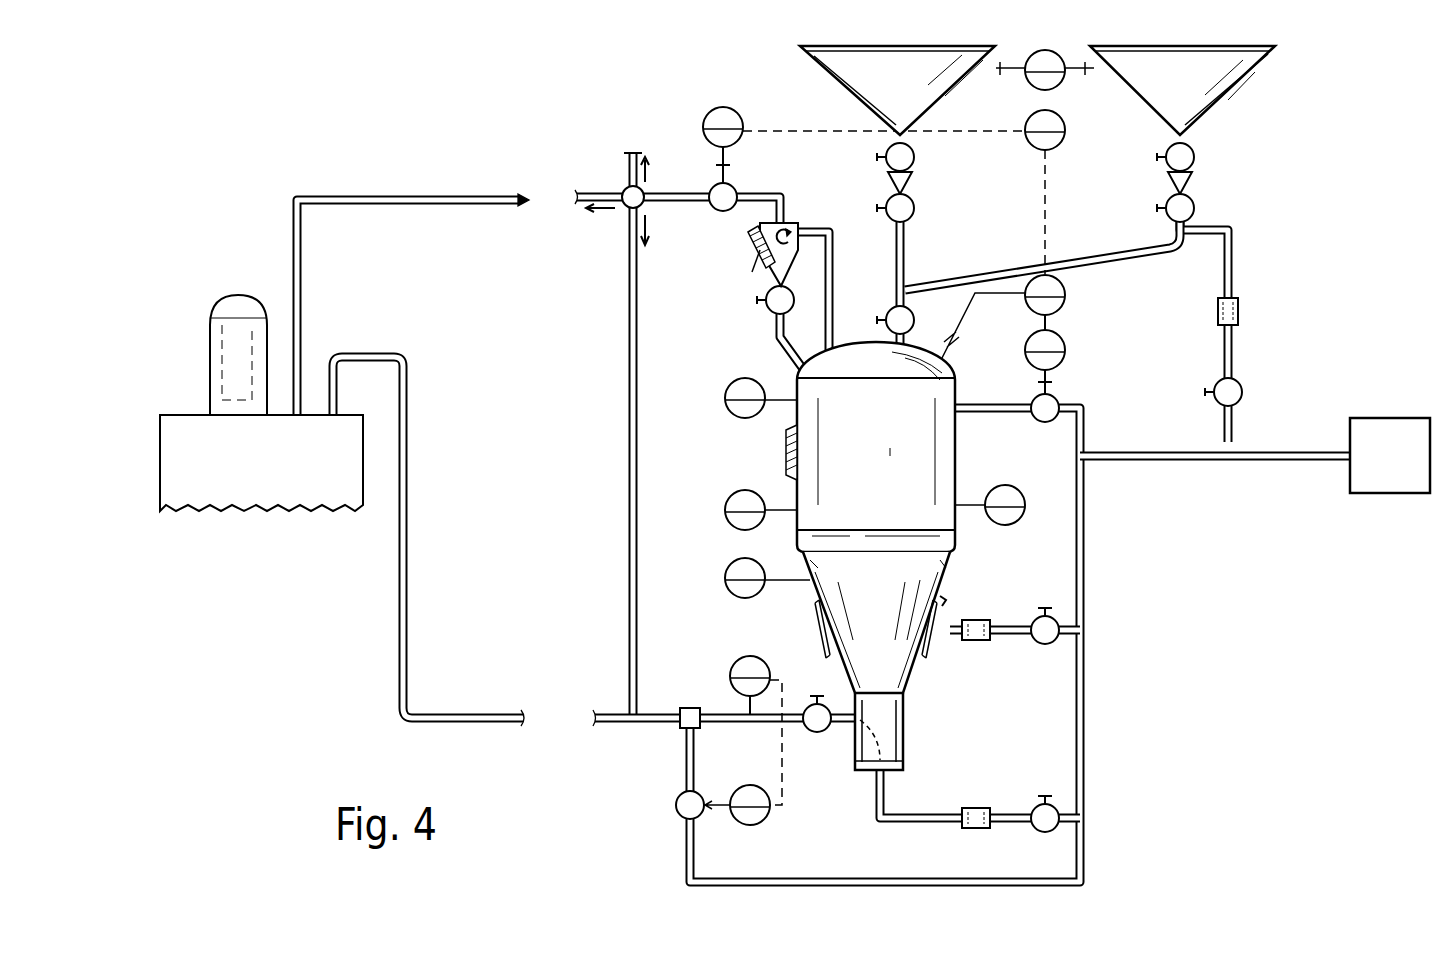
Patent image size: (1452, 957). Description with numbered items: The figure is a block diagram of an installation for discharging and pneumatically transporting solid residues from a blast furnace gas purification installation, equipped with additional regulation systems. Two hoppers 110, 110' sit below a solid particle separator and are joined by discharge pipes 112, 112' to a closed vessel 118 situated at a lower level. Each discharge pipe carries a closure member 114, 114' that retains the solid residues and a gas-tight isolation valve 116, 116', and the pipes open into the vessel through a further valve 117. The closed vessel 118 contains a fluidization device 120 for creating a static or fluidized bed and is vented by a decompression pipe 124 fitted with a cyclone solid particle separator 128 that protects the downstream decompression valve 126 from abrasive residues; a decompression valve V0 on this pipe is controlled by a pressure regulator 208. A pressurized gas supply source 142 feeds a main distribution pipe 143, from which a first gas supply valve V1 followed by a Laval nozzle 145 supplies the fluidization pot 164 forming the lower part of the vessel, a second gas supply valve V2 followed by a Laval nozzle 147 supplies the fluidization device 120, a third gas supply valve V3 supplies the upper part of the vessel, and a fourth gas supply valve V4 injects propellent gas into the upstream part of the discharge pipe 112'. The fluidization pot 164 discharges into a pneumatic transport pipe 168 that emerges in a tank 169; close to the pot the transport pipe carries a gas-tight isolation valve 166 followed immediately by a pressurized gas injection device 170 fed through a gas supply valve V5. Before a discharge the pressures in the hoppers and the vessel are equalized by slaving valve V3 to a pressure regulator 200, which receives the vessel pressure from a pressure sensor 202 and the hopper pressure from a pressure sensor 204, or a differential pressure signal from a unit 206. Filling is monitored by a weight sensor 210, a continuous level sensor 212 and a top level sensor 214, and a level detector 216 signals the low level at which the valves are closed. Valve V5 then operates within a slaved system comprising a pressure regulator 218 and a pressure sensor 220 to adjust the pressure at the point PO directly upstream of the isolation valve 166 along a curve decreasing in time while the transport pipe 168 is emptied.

The hopper 110 is at (870, 90).
The hopper 110' is at (1213, 90).
The discharge pipe 112 is at (937, 287).
The discharge pipe 112' is at (1044, 262).
The closure member 114 is at (932, 168).
The closure member 114' is at (1213, 168).
The isolation valve 116 is at (932, 210).
The isolation valve 116' is at (1213, 210).
The valve 117 is at (923, 306).
The closed vessel 118 is at (930, 462).
The fluidization device 120 is at (942, 600).
The decompression pipe 124 is at (835, 265).
The decompression valve 126 is at (766, 320).
The solid particle separator 128 is at (746, 262).
The pressurized gas supply source 142 is at (1382, 410).
The main distribution pipe 143 is at (1088, 510).
The Laval nozzle 145 is at (979, 805).
The Laval nozzle 147 is at (976, 643).
The fluidization pot 164 is at (910, 730).
The isolation valve 166 is at (821, 735).
The pneumatic transport pipe 168 is at (409, 584).
The tank 169 is at (265, 490).
The pressurized gas injection device 170 is at (695, 707).
The pressure regulator 200 is at (1059, 360).
The pressure sensor 202 is at (1059, 308).
The pressure sensor 204 is at (1059, 88).
The unit 206 is at (1059, 143).
The pressure regulator 208 is at (740, 126).
The weight sensor 210 is at (737, 523).
The continuous level sensor 212 is at (1001, 528).
The top level sensor 214 is at (738, 421).
The level detector 216 is at (738, 596).
The pressure regulator 218 is at (768, 820).
The pressure sensor 220 is at (792, 650).
The decompression valve V0 is at (716, 193).
The first gas supply valve V1 is at (1048, 831).
The second gas supply valve V2 is at (1045, 643).
The third gas supply valve V3 is at (1045, 425).
The fourth gas supply valve V4 is at (1242, 355).
The gas supply valve V5 is at (674, 807).
The point PO is at (755, 739).